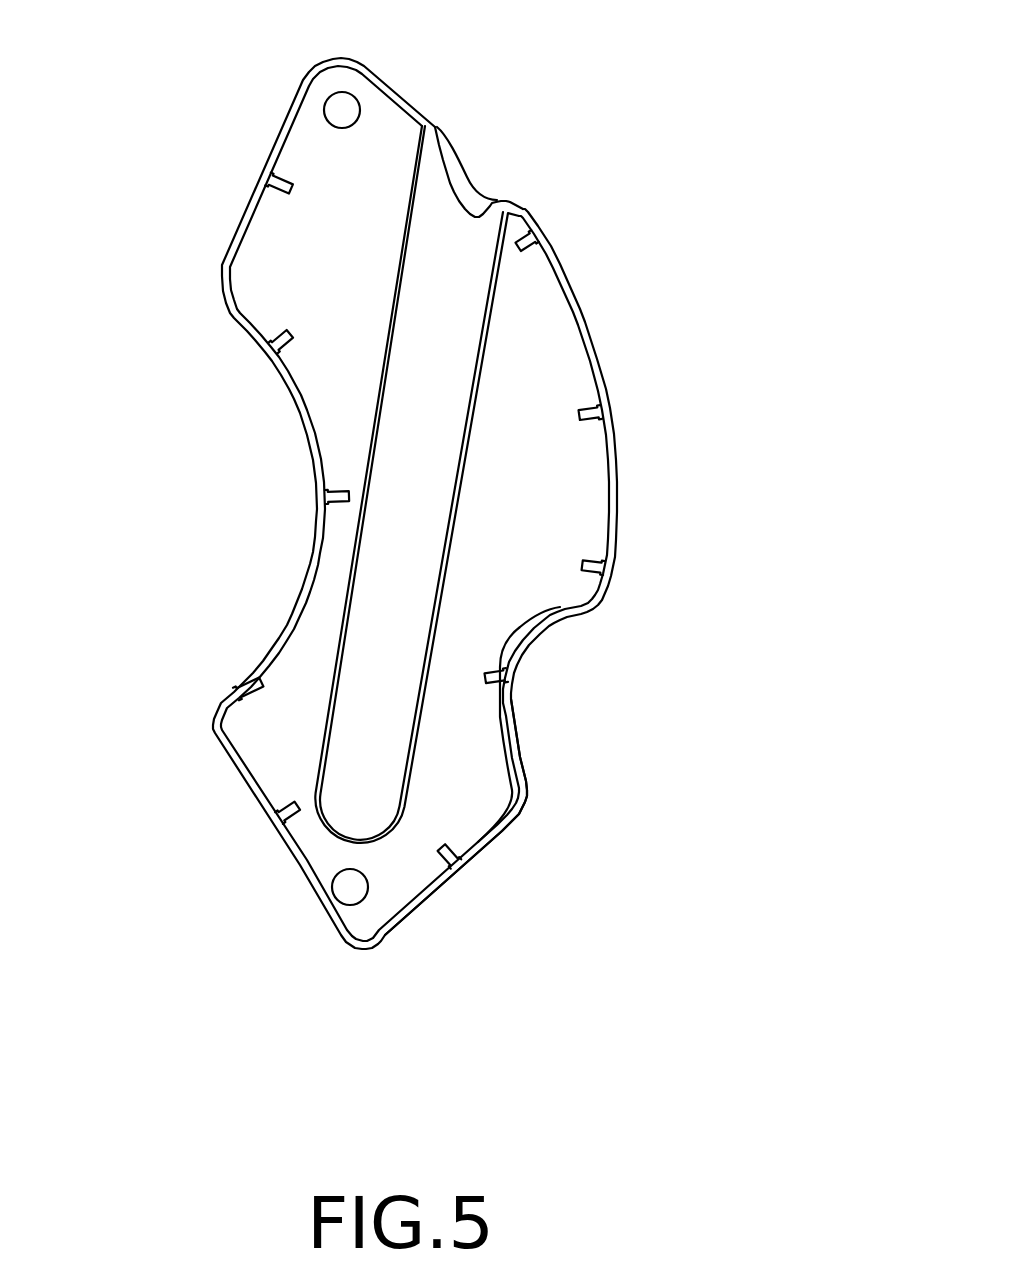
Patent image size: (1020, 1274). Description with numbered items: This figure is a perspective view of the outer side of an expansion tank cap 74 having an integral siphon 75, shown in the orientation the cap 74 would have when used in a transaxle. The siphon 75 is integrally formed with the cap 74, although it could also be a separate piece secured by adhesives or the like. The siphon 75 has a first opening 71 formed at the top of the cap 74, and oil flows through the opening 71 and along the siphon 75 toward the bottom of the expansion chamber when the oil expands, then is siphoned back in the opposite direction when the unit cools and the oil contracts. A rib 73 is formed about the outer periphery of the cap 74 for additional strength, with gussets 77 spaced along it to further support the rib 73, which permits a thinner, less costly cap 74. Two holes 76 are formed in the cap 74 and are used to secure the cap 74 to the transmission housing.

The first opening 71 is at (463, 180).
The rib 73 is at (317, 543).
The cap 74 is at (510, 830).
The siphon 75 is at (435, 620).
The holes 76 is at (342, 110).
The gussets 77 is at (272, 336).